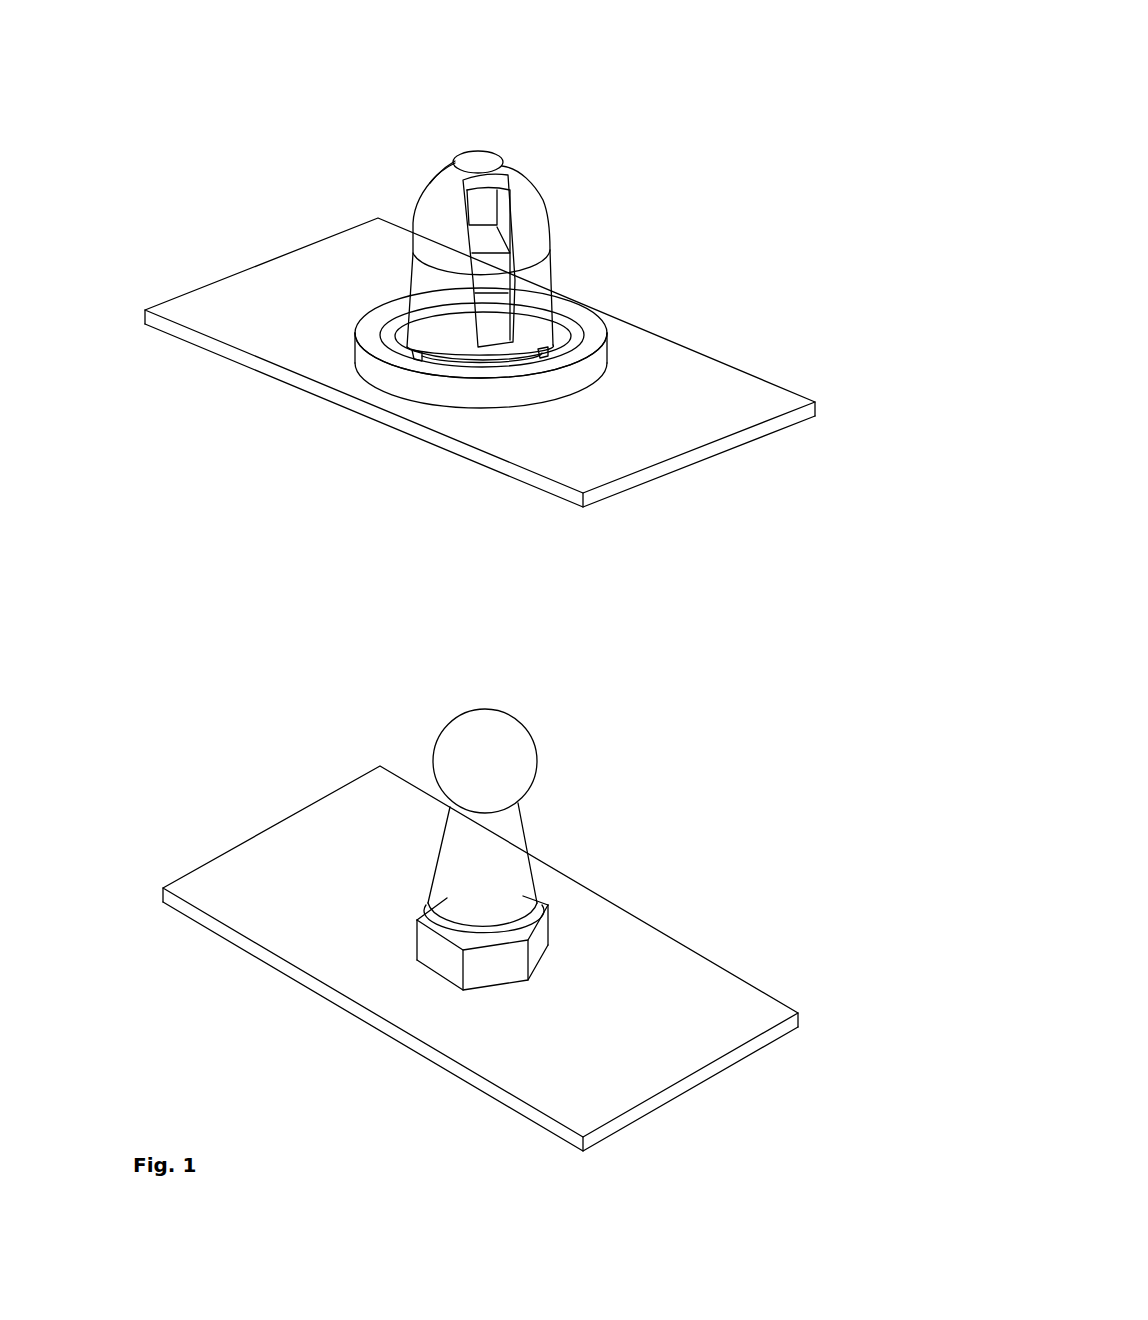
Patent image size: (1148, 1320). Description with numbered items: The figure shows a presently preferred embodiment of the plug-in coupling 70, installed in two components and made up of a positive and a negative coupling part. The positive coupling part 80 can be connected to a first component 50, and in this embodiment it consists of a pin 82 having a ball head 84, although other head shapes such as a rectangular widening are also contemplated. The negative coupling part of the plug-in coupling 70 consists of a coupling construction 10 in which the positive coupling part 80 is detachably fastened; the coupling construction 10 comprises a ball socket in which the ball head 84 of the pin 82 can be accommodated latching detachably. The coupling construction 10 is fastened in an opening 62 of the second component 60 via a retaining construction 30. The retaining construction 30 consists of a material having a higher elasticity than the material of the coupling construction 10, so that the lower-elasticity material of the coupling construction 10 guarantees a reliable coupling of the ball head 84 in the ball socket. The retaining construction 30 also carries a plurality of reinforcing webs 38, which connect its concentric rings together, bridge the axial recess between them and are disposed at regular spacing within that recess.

The coupling construction 10 is at (527, 172).
The retaining construction 30 is at (590, 302).
The reinforcing webs 38 is at (407, 353).
The second component 60 is at (702, 388).
The opening 62 is at (603, 347).
The plug-in coupling 70 is at (796, 136).
The positive coupling part 80 is at (688, 647).
The pin 82 is at (455, 830).
The ball head 84 is at (472, 733).
The first component 50 is at (692, 995).